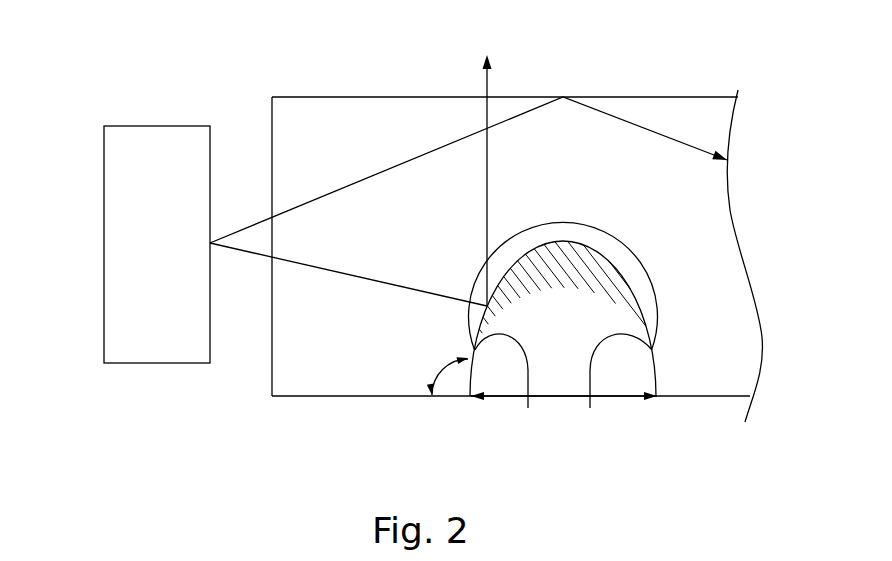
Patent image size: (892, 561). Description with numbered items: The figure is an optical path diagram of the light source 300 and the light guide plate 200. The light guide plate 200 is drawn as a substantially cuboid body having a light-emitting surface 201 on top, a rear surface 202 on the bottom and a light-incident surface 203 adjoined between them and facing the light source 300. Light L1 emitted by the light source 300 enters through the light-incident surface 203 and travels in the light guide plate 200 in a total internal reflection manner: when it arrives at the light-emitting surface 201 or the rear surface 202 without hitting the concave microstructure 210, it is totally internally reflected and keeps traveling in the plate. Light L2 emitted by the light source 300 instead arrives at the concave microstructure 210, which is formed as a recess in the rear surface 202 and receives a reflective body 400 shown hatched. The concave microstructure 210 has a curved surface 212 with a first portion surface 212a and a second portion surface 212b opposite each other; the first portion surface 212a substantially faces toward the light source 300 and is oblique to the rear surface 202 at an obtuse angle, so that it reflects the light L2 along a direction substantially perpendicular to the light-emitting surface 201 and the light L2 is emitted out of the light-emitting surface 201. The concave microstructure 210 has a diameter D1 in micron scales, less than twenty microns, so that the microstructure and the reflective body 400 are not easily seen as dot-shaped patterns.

The light guide plate 200 is at (501, 257).
The light-emitting surface 201 is at (300, 97).
The rear surface 202 is at (302, 398).
The light-incident surface 203 is at (270, 113).
The concave microstructure 210 is at (615, 367).
The surface 212 is at (656, 355).
The first portion surface 212a is at (515, 386).
The second portion surface 212b is at (611, 386).
The light source 300 is at (118, 250).
The reflective body 400 is at (573, 262).
The light L1 is at (657, 130).
The light L2 is at (487, 82).
The diameter D1 is at (564, 385).